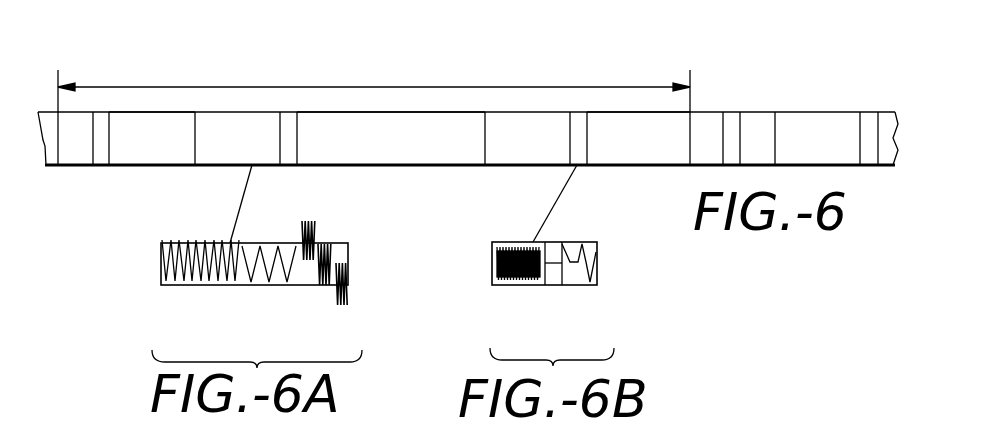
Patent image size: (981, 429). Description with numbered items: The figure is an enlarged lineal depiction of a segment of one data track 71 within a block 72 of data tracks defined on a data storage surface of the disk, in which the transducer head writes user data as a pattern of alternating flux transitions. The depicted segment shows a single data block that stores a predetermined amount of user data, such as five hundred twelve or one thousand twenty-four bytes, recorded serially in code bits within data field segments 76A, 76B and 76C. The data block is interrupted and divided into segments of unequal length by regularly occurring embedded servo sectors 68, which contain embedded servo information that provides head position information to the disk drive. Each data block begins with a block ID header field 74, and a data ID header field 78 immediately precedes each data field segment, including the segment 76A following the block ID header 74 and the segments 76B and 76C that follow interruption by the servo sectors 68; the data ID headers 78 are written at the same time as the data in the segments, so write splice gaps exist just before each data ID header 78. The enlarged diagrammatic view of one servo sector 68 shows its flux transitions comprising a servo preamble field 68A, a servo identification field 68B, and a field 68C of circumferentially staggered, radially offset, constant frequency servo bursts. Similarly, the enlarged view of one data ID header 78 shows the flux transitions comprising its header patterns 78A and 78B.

In FIG. 6, the embedded servo sector 68 is at (249, 142).
In FIG. 6A, the servo preamble field 68A is at (193, 288).
In FIG. 6A, the servo identification field 68B is at (256, 288).
In FIG. 6A, the servo burst field 68C is at (308, 288).
In FIG. 6, the data track 71 is at (46, 143).
In FIG. 6, the block of data tracks 72 is at (477, 86).
In FIG. 6, the block ID header field 74 is at (72, 158).
In FIG. 6, the first data field segment 76A is at (160, 132).
In FIG. 6, the second data field segment 76B is at (386, 143).
In FIG. 6, the third data field segment 76C is at (640, 130).
In FIG. 6, the data ID header field 78 is at (101, 122).
In FIG. 6B, the first data ID header pattern 78A is at (497, 288).
In FIG. 6B, the second data ID header pattern 78B is at (563, 288).